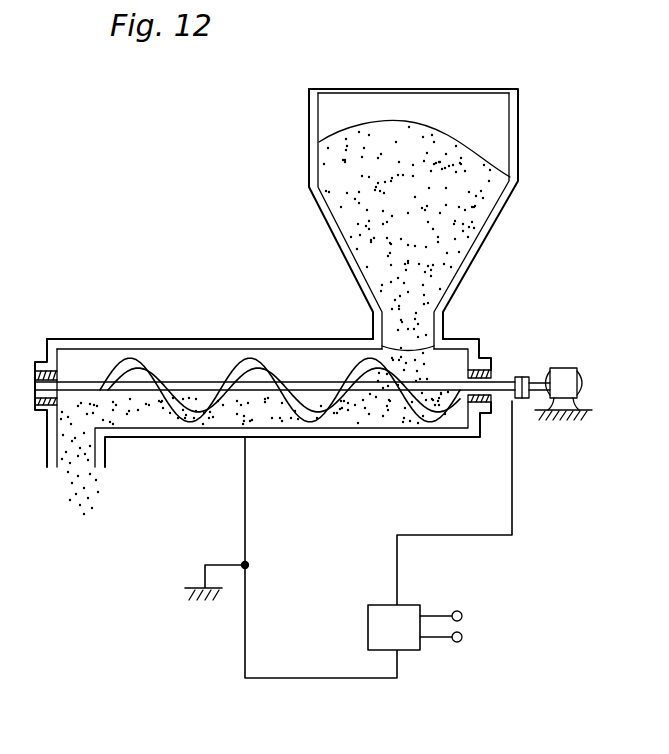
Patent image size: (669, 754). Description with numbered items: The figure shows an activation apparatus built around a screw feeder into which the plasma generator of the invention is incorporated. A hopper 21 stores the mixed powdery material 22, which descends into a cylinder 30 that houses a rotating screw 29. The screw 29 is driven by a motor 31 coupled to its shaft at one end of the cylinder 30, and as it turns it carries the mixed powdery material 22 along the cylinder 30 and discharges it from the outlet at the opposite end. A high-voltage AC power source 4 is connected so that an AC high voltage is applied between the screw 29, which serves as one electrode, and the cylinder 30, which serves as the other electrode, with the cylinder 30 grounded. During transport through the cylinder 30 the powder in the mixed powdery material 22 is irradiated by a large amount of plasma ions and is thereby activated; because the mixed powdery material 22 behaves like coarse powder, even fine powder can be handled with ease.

The hopper 21 is at (518, 142).
The mixed powdery material 22 is at (417, 147).
The screw 29 is at (241, 358).
The cylinder 30 is at (158, 437).
The motor 31 is at (560, 376).
The high-voltage AC power source 4 is at (409, 651).